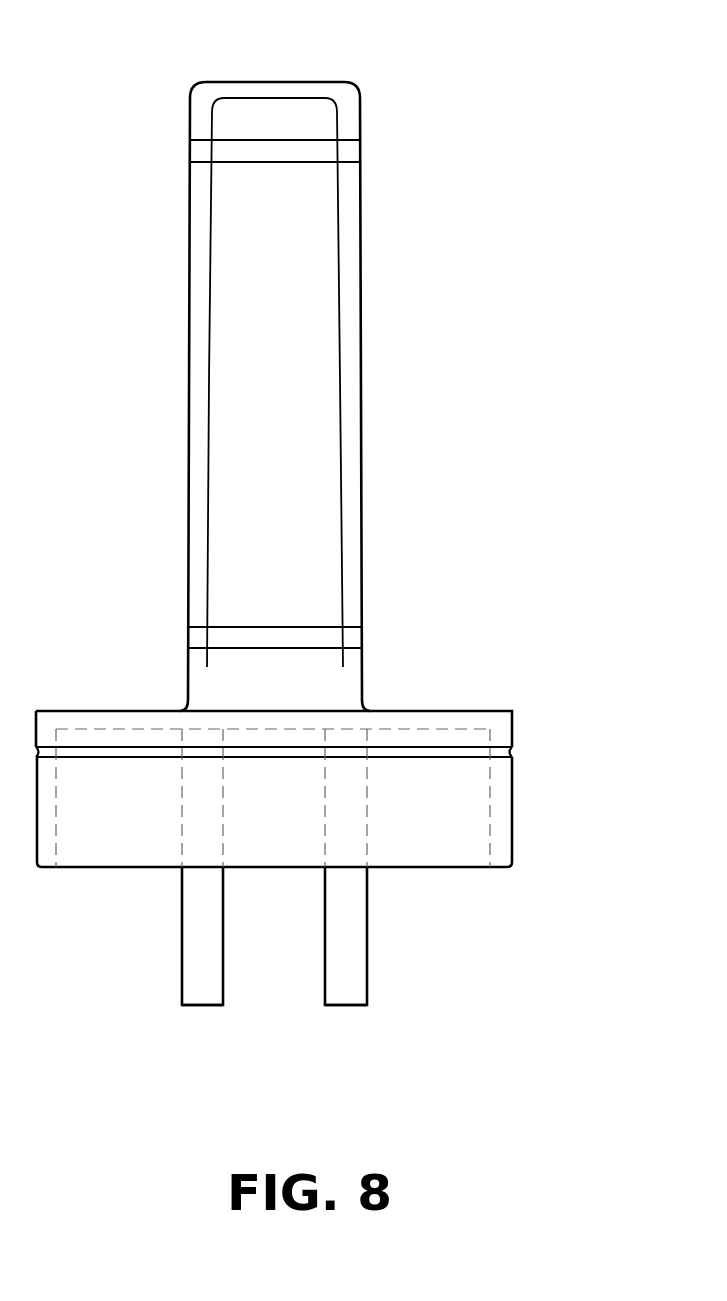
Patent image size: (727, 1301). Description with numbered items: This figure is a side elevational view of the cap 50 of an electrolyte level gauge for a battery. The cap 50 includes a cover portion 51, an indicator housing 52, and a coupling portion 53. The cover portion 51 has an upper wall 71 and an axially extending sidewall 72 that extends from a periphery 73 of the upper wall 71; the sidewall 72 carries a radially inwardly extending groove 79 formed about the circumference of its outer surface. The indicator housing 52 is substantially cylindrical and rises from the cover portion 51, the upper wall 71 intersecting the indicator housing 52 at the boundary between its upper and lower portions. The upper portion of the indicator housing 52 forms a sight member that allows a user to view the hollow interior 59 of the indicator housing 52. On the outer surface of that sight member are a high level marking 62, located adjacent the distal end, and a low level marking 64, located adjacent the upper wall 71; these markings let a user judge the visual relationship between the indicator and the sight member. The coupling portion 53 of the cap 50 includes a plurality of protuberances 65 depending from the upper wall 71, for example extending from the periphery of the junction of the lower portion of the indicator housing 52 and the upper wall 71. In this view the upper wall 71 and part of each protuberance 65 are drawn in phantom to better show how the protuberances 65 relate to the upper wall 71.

The cap 50 is at (435, 330).
The cover portion 51 is at (428, 708).
The indicator housing 52 is at (355, 557).
The coupling portion 53 is at (378, 914).
The hollow interior 59 is at (308, 390).
The high level marking 62 is at (353, 153).
The low level marking 64 is at (195, 640).
The protuberances 65 is at (200, 985).
The upper wall 71 is at (388, 718).
The sidewall 72 is at (502, 797).
The periphery 73 is at (515, 712).
The groove 79 is at (507, 750).